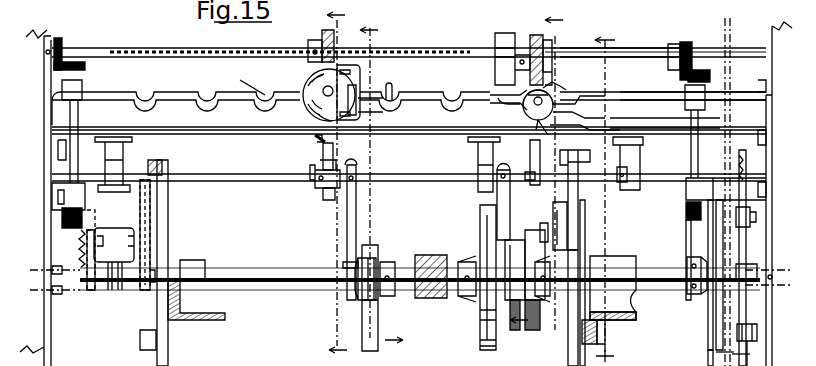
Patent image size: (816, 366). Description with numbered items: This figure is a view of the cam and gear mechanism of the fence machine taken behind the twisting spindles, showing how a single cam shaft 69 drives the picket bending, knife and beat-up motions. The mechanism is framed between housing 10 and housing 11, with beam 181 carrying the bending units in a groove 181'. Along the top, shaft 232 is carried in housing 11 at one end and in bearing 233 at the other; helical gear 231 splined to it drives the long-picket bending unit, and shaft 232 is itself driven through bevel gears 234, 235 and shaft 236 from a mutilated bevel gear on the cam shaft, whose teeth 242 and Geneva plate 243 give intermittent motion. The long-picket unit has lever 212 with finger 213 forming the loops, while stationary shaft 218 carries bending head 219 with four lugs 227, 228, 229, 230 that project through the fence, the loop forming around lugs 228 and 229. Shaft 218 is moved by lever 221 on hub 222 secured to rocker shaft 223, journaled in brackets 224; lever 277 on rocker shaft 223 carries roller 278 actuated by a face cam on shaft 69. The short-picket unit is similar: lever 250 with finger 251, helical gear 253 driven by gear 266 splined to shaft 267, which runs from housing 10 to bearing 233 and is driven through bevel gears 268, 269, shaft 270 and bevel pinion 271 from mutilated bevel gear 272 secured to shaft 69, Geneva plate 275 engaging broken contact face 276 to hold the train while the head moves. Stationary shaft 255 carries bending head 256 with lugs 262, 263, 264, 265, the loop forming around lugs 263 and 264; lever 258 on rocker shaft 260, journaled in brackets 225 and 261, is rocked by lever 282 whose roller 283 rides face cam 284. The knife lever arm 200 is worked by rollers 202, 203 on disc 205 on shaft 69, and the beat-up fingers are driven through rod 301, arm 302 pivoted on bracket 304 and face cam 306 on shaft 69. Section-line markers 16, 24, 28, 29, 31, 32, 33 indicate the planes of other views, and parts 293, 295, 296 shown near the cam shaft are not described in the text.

The housing 10 is at (776, 24).
The housing 11 is at (42, 30).
The section line 16 is at (340, 183).
The section line 24 is at (605, 358).
The section line 28 is at (605, 193).
The section line 29 is at (720, 187).
The section line 31 is at (383, 185).
The section line 32 is at (536, 170).
The section line 33 is at (740, 187).
The cam shaft 69 is at (292, 272).
The beam 181 is at (693, 128).
The groove 181' is at (409, 97).
The lever arm 200 is at (748, 182).
The roller 202 is at (751, 215).
The roller 203 is at (757, 268).
The disc 205 is at (758, 331).
The lever 212 is at (305, 127).
The finger 213 is at (318, 140).
The stationary shaft 218 is at (182, 77).
The bending head 219 is at (391, 87).
The lever 221 is at (334, 147).
The hub 222 is at (322, 188).
The rocker shaft 223 is at (430, 183).
The bracket 224 is at (120, 192).
The bracket 225 is at (483, 192).
The lug 227 is at (345, 70).
The lug 228 is at (318, 82).
The lug 229 is at (316, 115).
The lug 230 is at (378, 113).
The helical gear 231 is at (322, 42).
The shaft 232 is at (200, 47).
The bearing 233 is at (496, 38).
The bevel gear 234 is at (63, 40).
The bevel gear 235 is at (86, 67).
The shaft 236 is at (72, 160).
The teeth 242 is at (92, 300).
The Geneva plate 243 is at (84, 218).
The lever 250 is at (527, 108).
The finger 251 is at (503, 100).
The helical gear 253 is at (550, 86).
The stationary shaft 255 is at (605, 108).
The bending head 256 is at (540, 160).
The lever 258 is at (567, 200).
The rocker shaft 260 is at (553, 221).
The bracket 261 is at (637, 190).
The lug 262 is at (565, 100).
The lug 263 is at (560, 112).
The lug 264 is at (534, 132).
The lug 265 is at (665, 119).
The gear 266 is at (548, 40).
The shaft 267 is at (632, 48).
The bevel gear 268 is at (690, 42).
The bevel gear 269 is at (687, 78).
The shaft 270 is at (682, 170).
The bevel pinion 271 is at (690, 225).
The mutilated bevel gear 272 is at (708, 356).
The Geneva plate 275 is at (686, 210).
The broken contact face 276 is at (708, 333).
The lever 277 is at (351, 218).
The roller 278 is at (345, 292).
The lever 282 is at (521, 257).
The roller 283 is at (548, 235).
The face cam 284 is at (482, 222).
The bar 293 is at (580, 225).
The block 295 is at (609, 288).
The block 296 is at (604, 345).
The rod 301 is at (160, 162).
The arm 302 is at (168, 222).
The bracket 304 is at (188, 338).
The face cam 306 is at (142, 350).